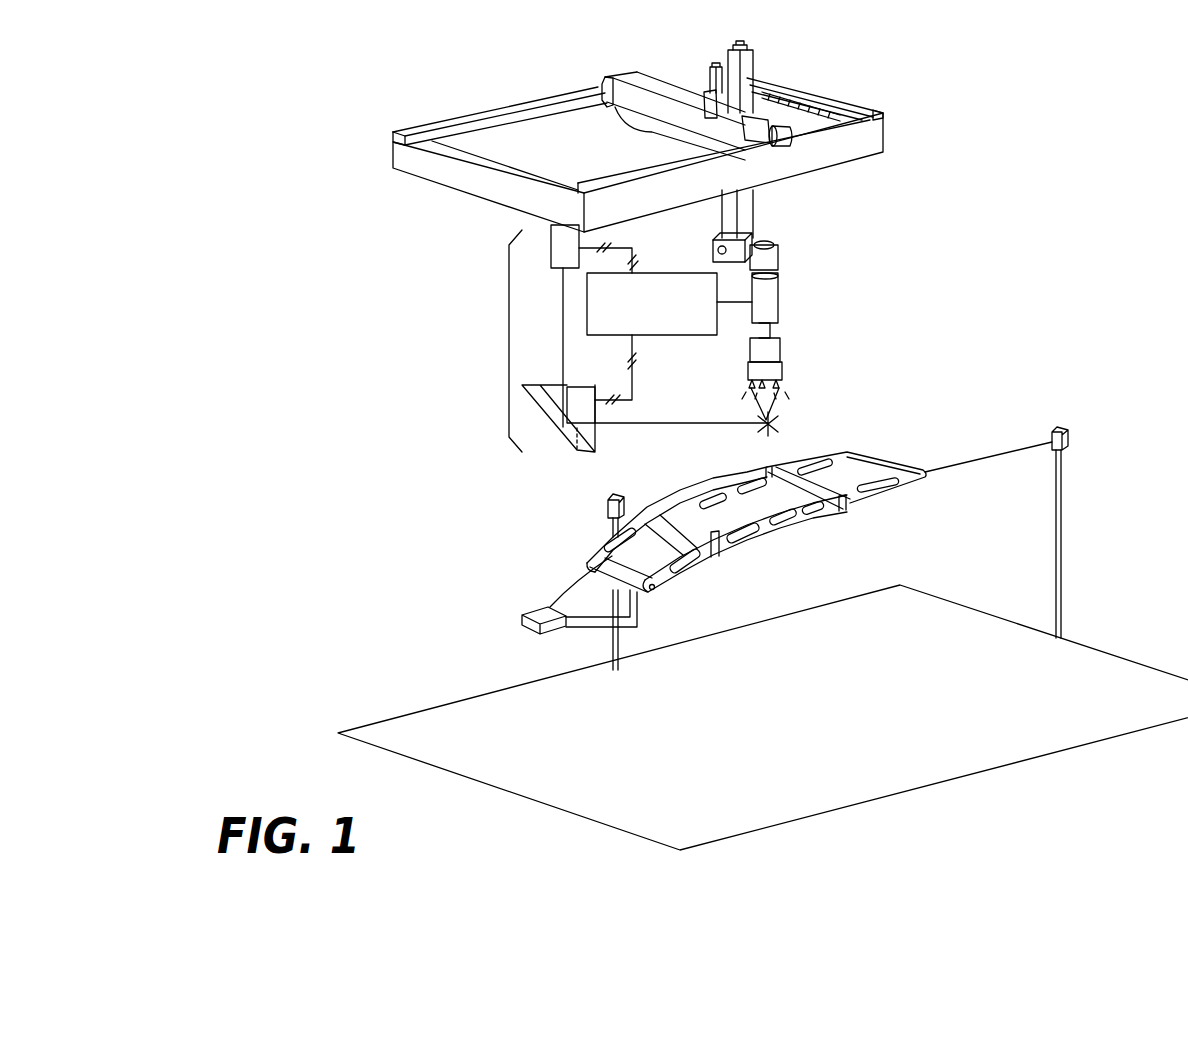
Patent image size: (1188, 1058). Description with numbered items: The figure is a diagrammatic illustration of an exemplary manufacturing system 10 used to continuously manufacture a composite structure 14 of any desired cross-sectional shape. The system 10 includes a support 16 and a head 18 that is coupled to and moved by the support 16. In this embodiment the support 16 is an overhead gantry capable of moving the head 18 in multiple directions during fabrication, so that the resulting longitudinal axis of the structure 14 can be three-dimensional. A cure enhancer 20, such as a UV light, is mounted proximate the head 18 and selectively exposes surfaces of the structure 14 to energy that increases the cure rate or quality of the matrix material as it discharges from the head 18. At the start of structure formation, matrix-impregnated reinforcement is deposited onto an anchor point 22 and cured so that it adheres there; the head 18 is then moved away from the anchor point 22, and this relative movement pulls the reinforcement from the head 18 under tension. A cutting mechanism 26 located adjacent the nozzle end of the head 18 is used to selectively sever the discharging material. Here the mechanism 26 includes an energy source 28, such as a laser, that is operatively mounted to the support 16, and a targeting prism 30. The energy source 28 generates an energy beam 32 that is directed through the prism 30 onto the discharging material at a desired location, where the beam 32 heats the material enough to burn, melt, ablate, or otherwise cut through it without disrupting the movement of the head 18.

The system 10 is at (1028, 148).
The composite structure 14 is at (833, 457).
The support 16 is at (473, 185).
The head 18 is at (793, 398).
The cure enhancer 20 is at (745, 384).
The anchor point 22 is at (607, 515).
The cutting mechanism 26 is at (509, 348).
The energy source 28 is at (573, 259).
The targeting prism 30 is at (590, 416).
The energy beam 32 is at (700, 427).